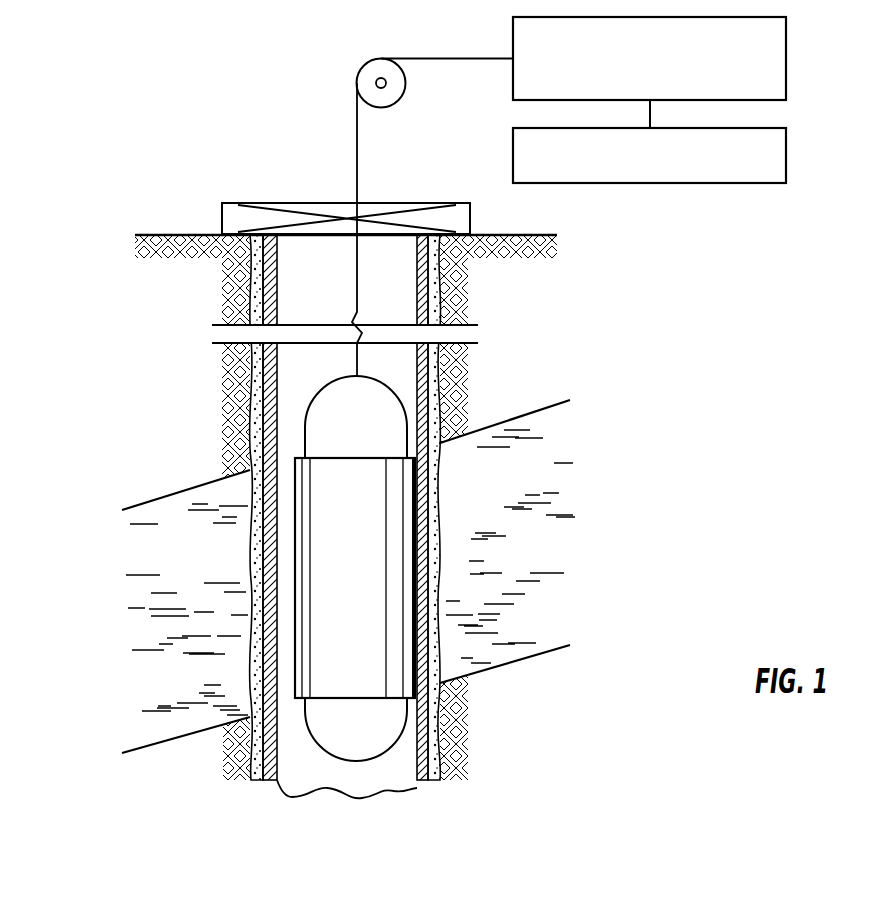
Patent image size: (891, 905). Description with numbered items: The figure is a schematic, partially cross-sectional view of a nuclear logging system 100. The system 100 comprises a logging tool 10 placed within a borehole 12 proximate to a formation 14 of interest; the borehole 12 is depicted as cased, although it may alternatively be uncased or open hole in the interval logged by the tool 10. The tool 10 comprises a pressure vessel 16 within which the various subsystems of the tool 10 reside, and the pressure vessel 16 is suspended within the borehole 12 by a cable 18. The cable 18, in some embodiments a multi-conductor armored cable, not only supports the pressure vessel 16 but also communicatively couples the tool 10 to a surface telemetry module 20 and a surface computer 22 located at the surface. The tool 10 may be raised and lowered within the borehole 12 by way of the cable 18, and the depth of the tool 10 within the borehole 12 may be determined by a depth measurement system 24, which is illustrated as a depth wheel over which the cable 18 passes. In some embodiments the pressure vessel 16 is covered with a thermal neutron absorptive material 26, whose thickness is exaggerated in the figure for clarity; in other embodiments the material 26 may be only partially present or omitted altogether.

The nuclear logging system 100 is at (226, 110).
The logging tool 10 is at (296, 558).
The borehole 12 is at (328, 278).
The formation 14 is at (535, 544).
The pressure vessel 16 is at (367, 437).
The cable 18 is at (358, 160).
The surface telemetry module 20 is at (787, 47).
The surface computer 22 is at (787, 158).
The depth measurement system 24 is at (399, 101).
The thermal neutron absorptive material 26 is at (350, 688).